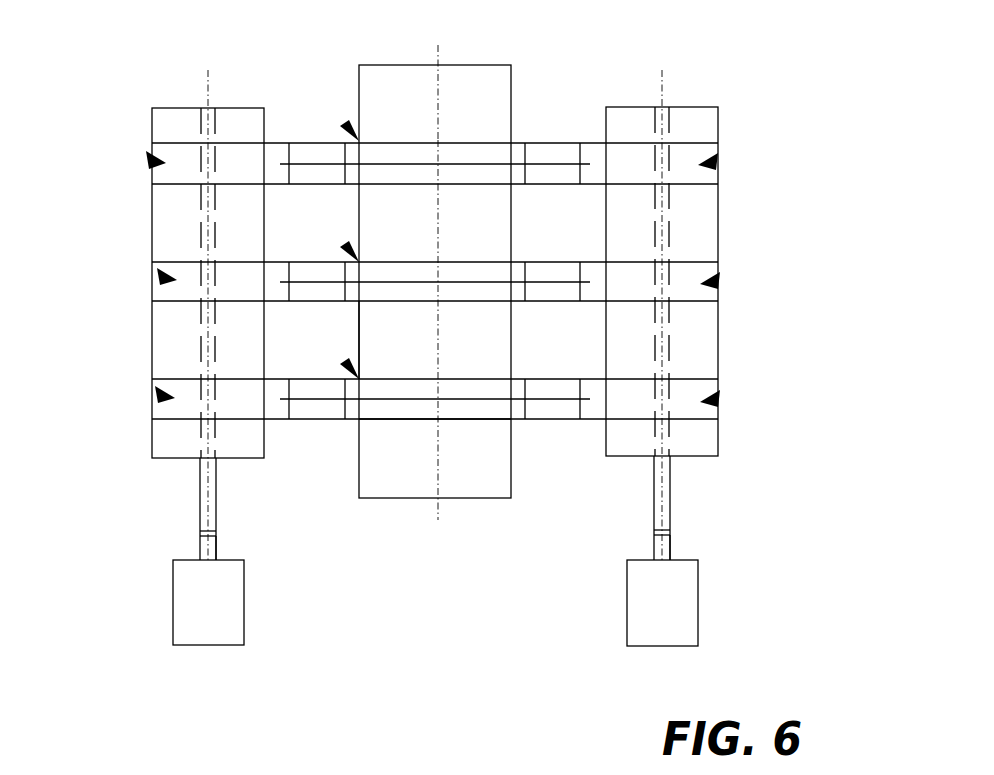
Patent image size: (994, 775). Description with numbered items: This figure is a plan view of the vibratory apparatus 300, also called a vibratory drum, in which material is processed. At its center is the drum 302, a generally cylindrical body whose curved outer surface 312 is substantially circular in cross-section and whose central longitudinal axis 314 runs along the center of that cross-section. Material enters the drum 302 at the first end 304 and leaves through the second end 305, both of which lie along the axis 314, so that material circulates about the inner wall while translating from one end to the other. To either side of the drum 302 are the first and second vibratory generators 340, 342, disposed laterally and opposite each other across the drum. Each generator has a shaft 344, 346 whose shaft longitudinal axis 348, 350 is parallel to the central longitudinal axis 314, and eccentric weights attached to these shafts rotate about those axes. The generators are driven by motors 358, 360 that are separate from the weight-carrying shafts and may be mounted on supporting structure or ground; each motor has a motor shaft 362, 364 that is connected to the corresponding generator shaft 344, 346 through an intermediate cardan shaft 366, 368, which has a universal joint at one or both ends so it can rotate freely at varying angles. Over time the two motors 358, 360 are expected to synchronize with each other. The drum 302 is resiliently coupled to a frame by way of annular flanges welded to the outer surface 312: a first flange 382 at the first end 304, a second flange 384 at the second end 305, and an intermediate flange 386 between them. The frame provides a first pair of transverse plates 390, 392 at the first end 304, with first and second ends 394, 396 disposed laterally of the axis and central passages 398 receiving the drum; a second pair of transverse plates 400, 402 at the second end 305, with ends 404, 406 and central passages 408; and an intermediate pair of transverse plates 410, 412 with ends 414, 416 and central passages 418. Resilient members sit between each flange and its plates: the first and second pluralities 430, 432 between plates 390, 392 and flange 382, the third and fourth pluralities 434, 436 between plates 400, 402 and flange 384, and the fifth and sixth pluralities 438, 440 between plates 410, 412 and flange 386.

The vibratory apparatus 300 is at (439, 329).
The drum 302 is at (498, 77).
The first end 304 is at (366, 490).
The second end 305 is at (372, 82).
The outer surface 312 is at (366, 468).
The central longitudinal axis 314 is at (442, 505).
The first vibratory generator 340 is at (170, 120).
The second vibratory generator 342 is at (700, 125).
The shaft 344 is at (192, 438).
The shaft 346 is at (672, 437).
The shaft longitudinal axis 348 is at (198, 480).
The shaft longitudinal axis 350 is at (673, 480).
The motor 358 is at (192, 603).
The motor 360 is at (640, 603).
The motor shaft 362 is at (218, 538).
The motor shaft 364 is at (673, 537).
The cardan shaft 366 is at (198, 518).
The cardan shaft 368 is at (660, 515).
The first flange 382 is at (440, 399).
The second flange 384 is at (440, 164).
The intermediate flange 386 is at (440, 282).
The transverse plate 390 is at (720, 419).
The transverse plate 392 is at (720, 379).
The first end 394 is at (155, 392).
The second end 396 is at (720, 398).
The central passage 398 is at (345, 362).
The transverse plate 400 is at (720, 184).
The transverse plate 402 is at (720, 143).
The first end 404 is at (146, 157).
The second end 406 is at (718, 160).
The central passage 408 is at (345, 124).
The transverse plate 410 is at (720, 301).
The transverse plate 412 is at (720, 262).
The first end 414 is at (157, 274).
The second end 416 is at (720, 280).
The central passage 418 is at (345, 245).
The first plurality of resilient members 430 is at (553, 408).
The second plurality of resilient members 432 is at (553, 393).
The third plurality of resilient members 434 is at (558, 173).
The fourth plurality of resilient members 436 is at (553, 157).
The fifth plurality of resilient members 438 is at (562, 291).
The sixth plurality of resilient members 440 is at (557, 276).